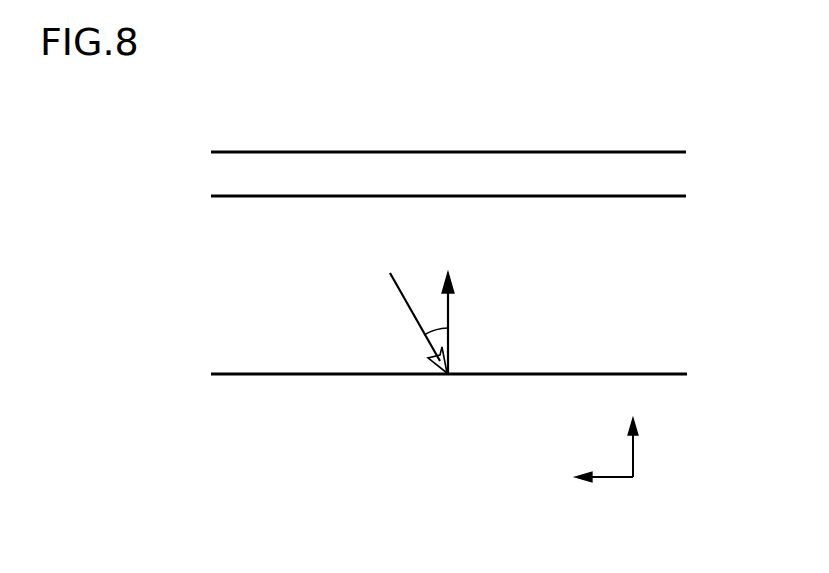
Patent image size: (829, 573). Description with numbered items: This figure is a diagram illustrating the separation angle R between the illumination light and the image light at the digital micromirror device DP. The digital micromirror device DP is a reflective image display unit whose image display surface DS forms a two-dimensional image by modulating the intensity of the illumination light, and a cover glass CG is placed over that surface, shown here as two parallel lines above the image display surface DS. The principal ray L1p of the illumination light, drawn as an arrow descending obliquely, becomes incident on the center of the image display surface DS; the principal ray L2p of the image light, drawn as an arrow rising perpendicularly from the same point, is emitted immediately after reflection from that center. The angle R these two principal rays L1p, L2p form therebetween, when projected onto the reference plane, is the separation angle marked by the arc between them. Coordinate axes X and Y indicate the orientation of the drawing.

The cover glass CG is at (697, 152).
The image display surface DS is at (472, 373).
The digital micromirror device DP is at (445, 395).
The principal ray of the illumination light L1p is at (396, 307).
The principal ray of the image light L2p is at (446, 307).
The separation angle R is at (434, 314).
The X axis X is at (633, 432).
The Y axis Y is at (592, 476).